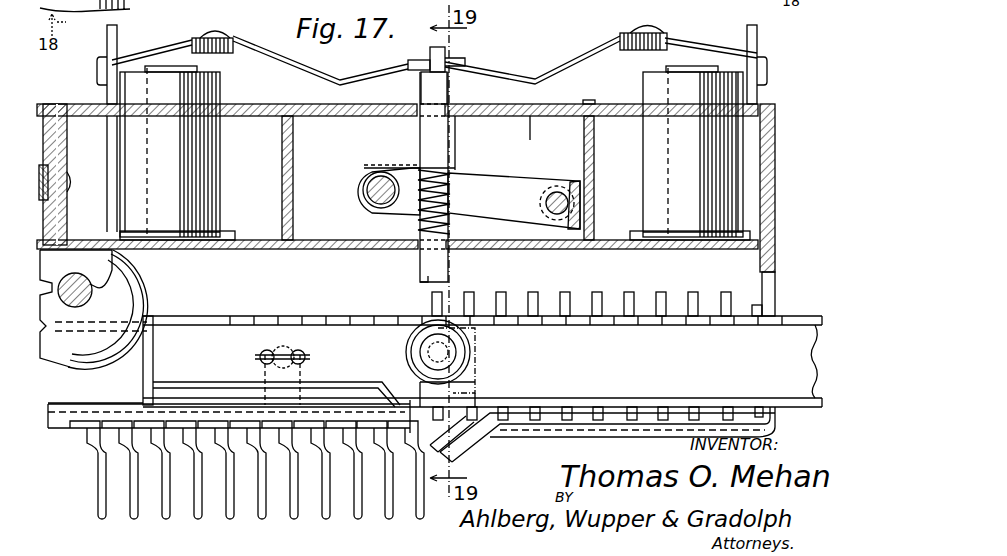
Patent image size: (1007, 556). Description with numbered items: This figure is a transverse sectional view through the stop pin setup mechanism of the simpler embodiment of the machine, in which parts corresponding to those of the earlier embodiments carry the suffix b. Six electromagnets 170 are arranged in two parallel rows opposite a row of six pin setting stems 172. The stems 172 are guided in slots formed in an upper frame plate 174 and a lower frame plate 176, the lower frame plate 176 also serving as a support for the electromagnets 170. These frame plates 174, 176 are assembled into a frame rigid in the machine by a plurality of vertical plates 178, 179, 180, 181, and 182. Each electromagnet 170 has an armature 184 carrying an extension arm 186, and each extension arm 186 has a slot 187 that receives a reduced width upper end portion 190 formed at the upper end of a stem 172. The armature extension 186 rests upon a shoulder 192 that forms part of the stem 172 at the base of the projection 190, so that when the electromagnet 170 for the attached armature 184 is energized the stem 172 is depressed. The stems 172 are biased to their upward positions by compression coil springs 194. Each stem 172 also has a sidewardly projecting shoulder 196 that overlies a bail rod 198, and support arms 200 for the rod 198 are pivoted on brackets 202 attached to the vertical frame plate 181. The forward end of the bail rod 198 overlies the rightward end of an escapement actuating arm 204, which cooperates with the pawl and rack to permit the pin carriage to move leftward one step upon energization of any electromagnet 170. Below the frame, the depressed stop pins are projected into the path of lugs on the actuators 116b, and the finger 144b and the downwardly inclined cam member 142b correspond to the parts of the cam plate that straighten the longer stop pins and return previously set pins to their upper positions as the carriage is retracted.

The actuator 116b is at (134, 512).
The cam member 142b is at (428, 450).
The finger 144b is at (470, 448).
The electromagnet 170 is at (188, 185).
The pin setting stem 172 is at (449, 270).
The upper frame plate 174 is at (530, 120).
The lower frame plate 176 is at (356, 241).
The vertical plate 178 is at (60, 150).
The vertical plate 179 is at (64, 175).
The vertical plate 180 is at (293, 158).
The vertical frame plate 181 is at (595, 146).
The vertical plate 182 is at (774, 160).
The armature 184 is at (692, 52).
The extension arm 186 is at (580, 60).
The slot 187 is at (430, 62).
The upper end portion 190 is at (445, 53).
The shoulder 192 is at (419, 85).
The compression coil spring 194 is at (418, 232).
The sidewardly projecting shoulder 196 is at (374, 170).
The bail rod 198 is at (366, 191).
The support arm 200 is at (515, 190).
The bracket 202 is at (582, 180).
The escapement actuating arm 204 is at (238, 36).